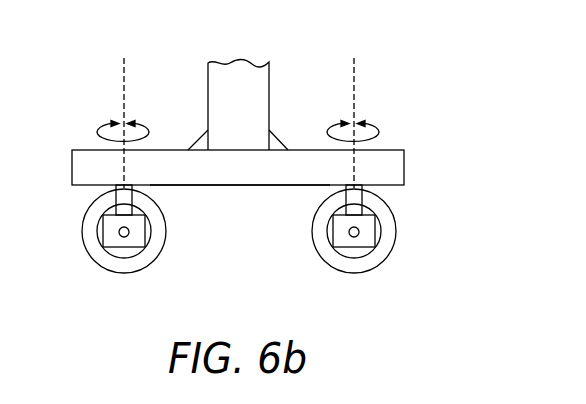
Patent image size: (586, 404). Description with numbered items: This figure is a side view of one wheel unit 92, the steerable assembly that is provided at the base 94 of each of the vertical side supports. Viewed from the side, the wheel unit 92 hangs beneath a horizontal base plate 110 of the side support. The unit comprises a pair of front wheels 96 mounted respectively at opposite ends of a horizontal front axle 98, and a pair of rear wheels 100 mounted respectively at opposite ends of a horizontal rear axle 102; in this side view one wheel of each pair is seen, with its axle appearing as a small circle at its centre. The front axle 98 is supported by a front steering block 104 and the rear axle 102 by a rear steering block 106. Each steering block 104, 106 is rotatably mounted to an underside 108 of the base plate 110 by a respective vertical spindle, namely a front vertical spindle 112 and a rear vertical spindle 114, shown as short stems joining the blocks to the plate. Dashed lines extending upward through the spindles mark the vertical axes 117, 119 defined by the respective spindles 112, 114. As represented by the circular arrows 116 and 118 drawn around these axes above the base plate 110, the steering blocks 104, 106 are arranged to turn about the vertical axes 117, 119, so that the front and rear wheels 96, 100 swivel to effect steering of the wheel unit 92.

The wheel unit 92 is at (434, 185).
The base 94 is at (260, 81).
The front wheels 96 is at (95, 272).
The front axle 98 is at (119, 233).
The rear wheels 100 is at (386, 272).
The rear axle 102 is at (359, 232).
The front steering block 104 is at (137, 242).
The rear steering block 106 is at (342, 246).
The underside 108 is at (241, 189).
The base plate 110 is at (72, 170).
The front vertical spindle 112 is at (118, 210).
The rear vertical spindle 114 is at (361, 212).
The circular arrow 116 is at (104, 131).
The vertical axis 117 is at (120, 67).
The circular arrow 118 is at (378, 131).
The vertical axis 119 is at (358, 67).